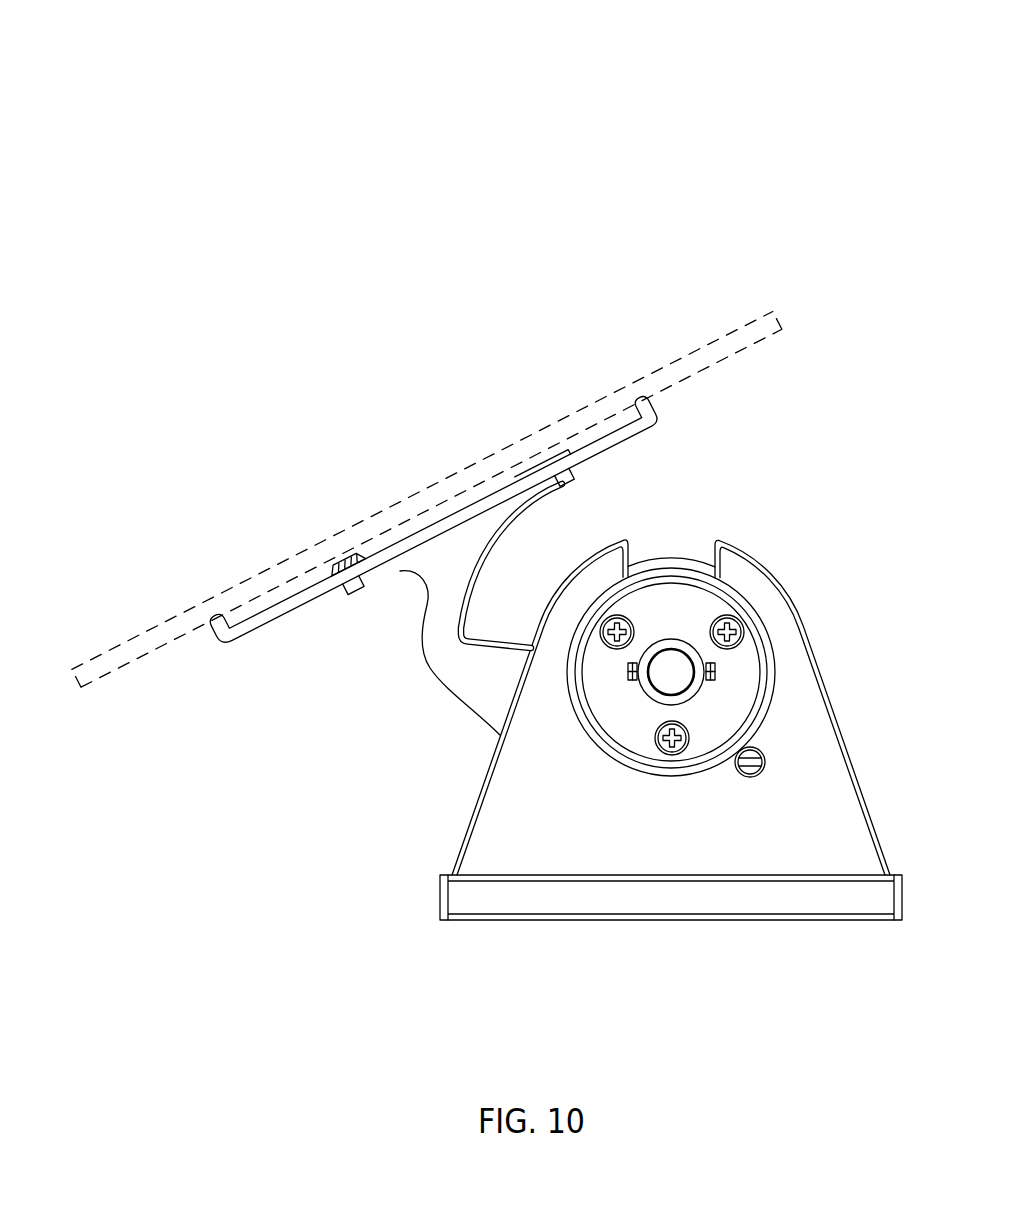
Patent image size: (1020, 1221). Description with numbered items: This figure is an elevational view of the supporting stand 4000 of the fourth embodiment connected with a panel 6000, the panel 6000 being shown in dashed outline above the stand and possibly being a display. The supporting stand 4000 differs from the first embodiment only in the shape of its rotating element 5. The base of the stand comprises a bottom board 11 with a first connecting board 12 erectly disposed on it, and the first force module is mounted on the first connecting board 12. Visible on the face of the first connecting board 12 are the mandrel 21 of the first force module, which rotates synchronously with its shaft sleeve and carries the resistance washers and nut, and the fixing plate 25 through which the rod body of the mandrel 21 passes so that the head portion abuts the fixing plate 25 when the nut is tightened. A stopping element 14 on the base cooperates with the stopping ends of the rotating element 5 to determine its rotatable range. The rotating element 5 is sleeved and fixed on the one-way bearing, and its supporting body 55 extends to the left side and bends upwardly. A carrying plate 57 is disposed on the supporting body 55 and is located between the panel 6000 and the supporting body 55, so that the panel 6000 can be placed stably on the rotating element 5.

The supporting stand 4000 is at (290, 36).
The panel 6000 is at (670, 362).
The rotating element 5 is at (396, 664).
The supporting body 55 is at (467, 683).
The carrying plate 57 is at (266, 622).
The bottom board 11 is at (463, 902).
The first connecting board 12 is at (823, 818).
The stopping element 14 is at (765, 762).
The mandrel 21 is at (673, 681).
The fixing plate 25 is at (735, 662).